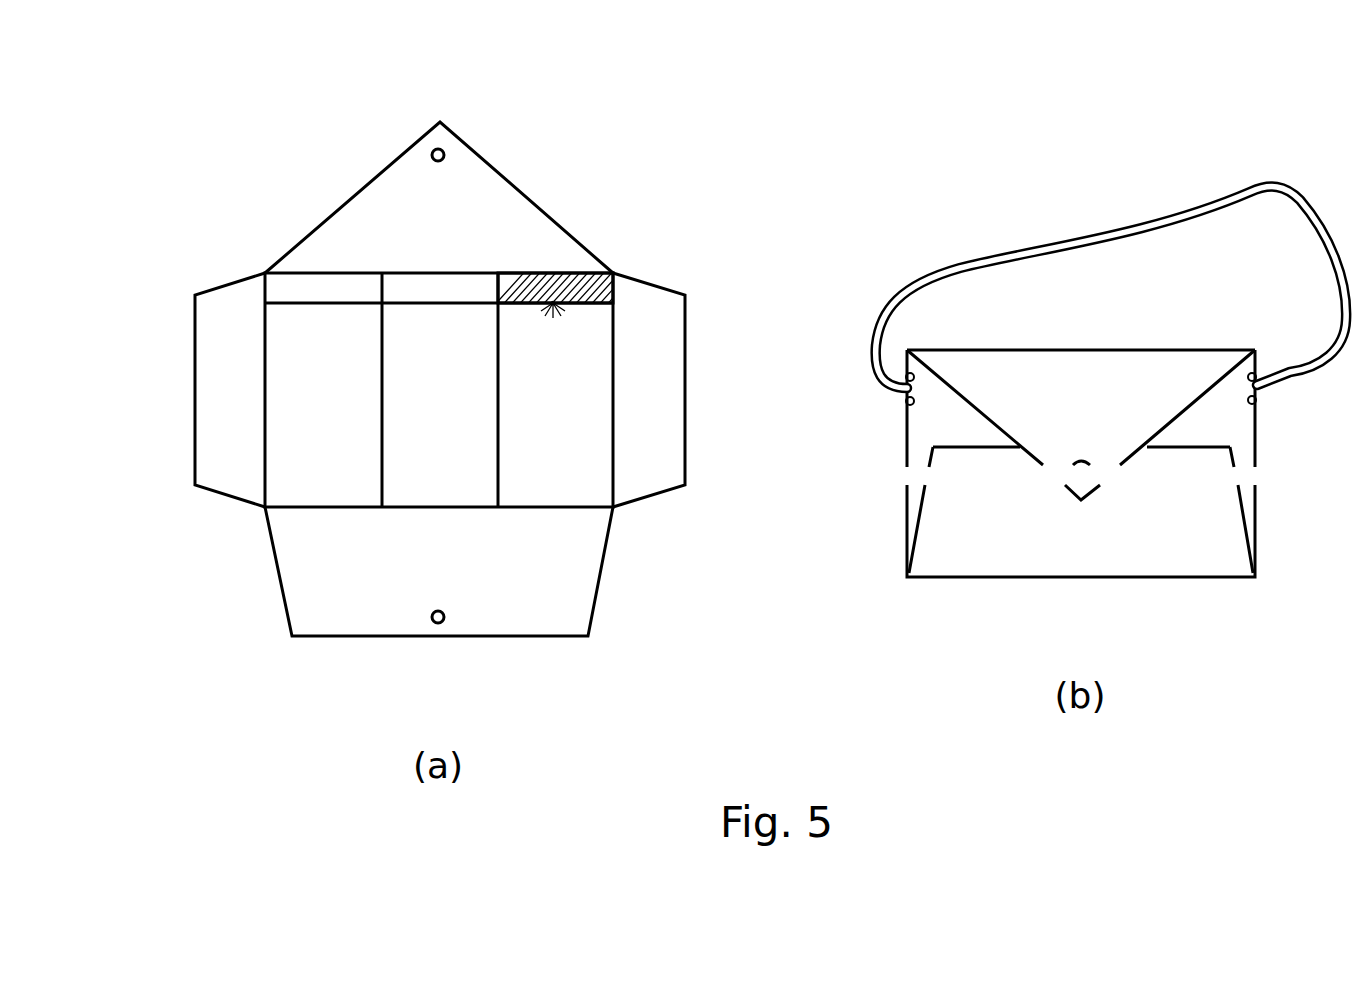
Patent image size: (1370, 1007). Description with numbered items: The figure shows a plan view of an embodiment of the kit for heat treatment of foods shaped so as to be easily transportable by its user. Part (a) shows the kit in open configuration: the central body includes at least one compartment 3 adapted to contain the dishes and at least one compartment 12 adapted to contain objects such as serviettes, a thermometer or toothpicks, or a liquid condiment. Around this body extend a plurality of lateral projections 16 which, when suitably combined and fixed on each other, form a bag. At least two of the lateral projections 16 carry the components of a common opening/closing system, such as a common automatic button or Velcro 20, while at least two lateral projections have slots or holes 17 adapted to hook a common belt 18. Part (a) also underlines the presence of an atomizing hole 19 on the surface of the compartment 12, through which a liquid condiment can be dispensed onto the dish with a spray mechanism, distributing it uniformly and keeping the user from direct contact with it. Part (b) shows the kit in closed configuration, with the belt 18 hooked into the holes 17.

The compartment 3 is at (350, 487).
The compartment 12 is at (585, 275).
The lateral projections 16 is at (370, 207).
The slots or holes 17 is at (1250, 372).
The belt 18 is at (993, 262).
The atomizing hole 19 is at (555, 308).
The automatic button or Velcro 20 is at (441, 124).